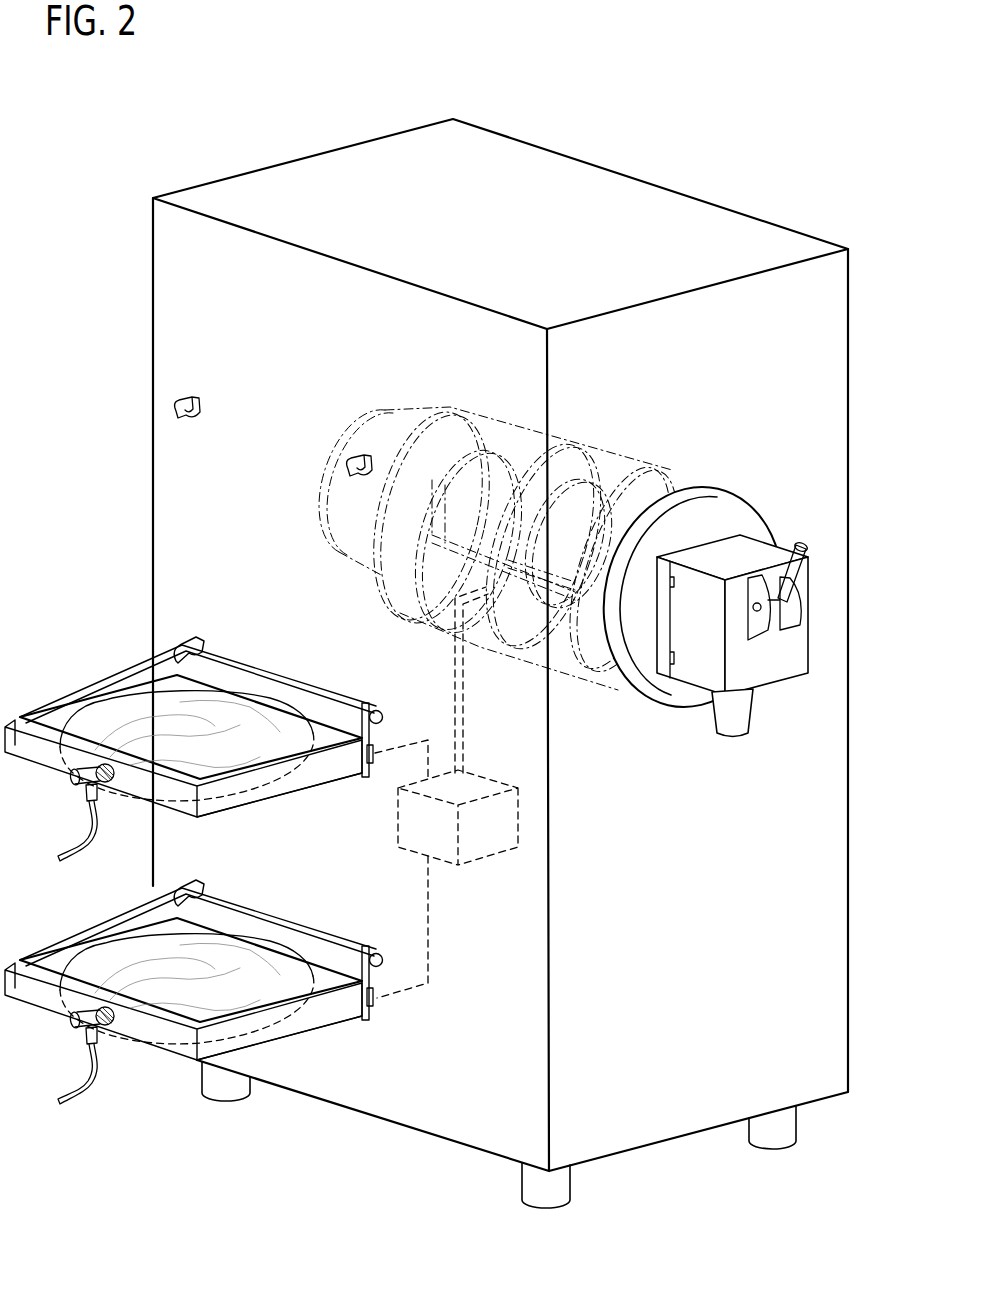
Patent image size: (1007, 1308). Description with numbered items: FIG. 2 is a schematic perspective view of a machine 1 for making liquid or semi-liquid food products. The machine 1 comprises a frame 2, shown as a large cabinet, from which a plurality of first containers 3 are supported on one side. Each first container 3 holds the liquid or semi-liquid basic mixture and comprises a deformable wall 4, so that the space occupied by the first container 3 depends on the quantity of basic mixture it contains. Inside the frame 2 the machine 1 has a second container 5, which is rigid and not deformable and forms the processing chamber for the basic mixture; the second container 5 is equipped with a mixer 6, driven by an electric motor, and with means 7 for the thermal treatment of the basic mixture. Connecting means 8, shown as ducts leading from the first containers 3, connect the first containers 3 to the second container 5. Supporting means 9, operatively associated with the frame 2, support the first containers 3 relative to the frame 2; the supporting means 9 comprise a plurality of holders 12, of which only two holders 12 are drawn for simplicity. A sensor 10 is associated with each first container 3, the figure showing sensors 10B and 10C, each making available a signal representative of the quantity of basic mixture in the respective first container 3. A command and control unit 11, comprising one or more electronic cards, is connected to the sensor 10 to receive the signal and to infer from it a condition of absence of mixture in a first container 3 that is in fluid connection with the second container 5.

The machine for making liquid or semi-liquid products 1 is at (312, 140).
The frame 2 is at (704, 194).
The first container 3 is at (115, 693).
The deformable wall 4 is at (212, 751).
The second container 5 is at (617, 446).
The mixer 6 is at (672, 474).
The means for thermal treatment 7 is at (443, 409).
The connecting means 8 is at (101, 806).
The supporting means 9 is at (241, 814).
The holder 12 is at (279, 916).
The sensor 10 is at (385, 956).
The sensor 10B is at (373, 772).
The sensor 10C is at (373, 1015).
The command and control unit 11 is at (505, 827).